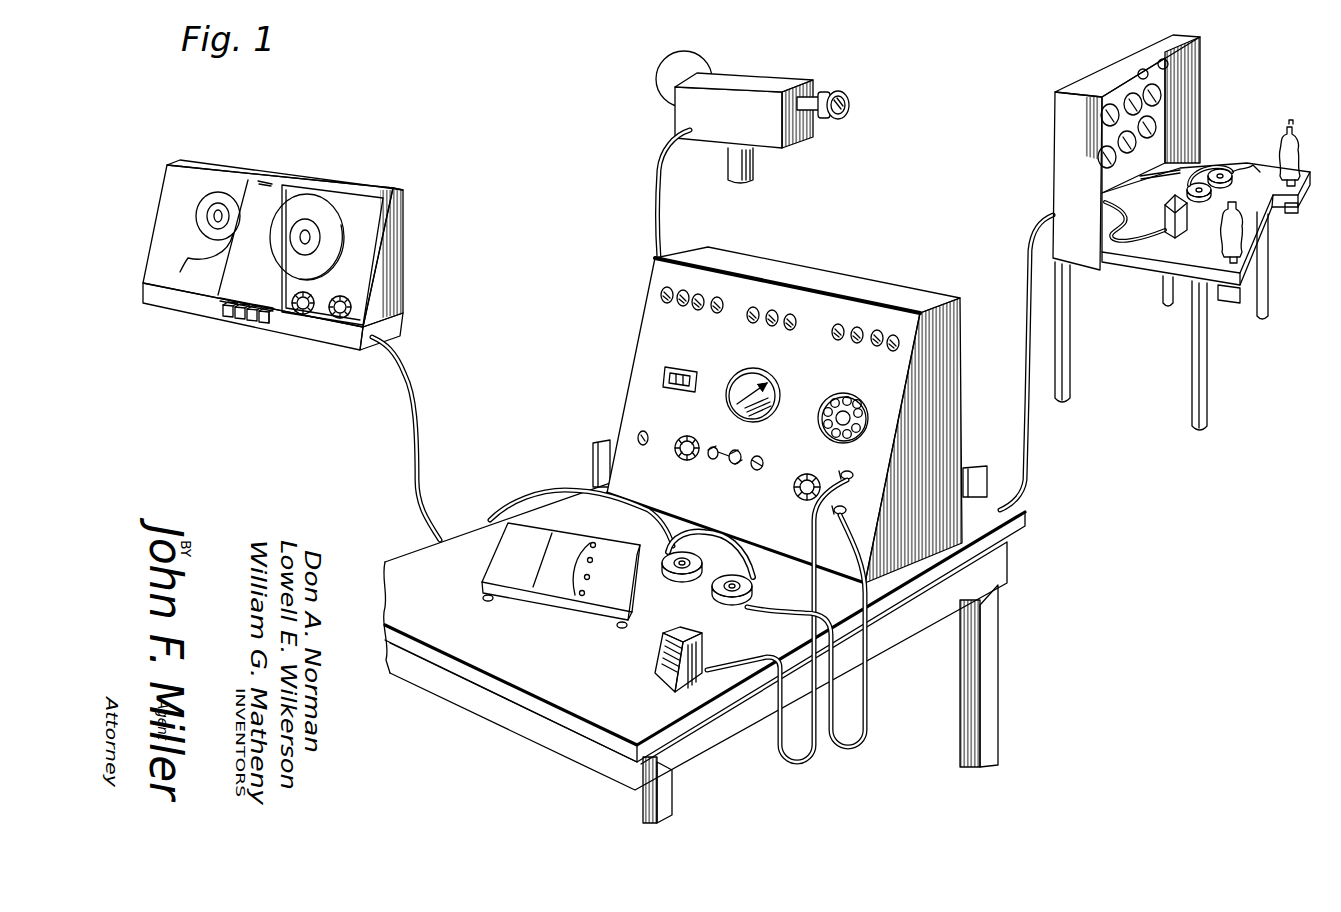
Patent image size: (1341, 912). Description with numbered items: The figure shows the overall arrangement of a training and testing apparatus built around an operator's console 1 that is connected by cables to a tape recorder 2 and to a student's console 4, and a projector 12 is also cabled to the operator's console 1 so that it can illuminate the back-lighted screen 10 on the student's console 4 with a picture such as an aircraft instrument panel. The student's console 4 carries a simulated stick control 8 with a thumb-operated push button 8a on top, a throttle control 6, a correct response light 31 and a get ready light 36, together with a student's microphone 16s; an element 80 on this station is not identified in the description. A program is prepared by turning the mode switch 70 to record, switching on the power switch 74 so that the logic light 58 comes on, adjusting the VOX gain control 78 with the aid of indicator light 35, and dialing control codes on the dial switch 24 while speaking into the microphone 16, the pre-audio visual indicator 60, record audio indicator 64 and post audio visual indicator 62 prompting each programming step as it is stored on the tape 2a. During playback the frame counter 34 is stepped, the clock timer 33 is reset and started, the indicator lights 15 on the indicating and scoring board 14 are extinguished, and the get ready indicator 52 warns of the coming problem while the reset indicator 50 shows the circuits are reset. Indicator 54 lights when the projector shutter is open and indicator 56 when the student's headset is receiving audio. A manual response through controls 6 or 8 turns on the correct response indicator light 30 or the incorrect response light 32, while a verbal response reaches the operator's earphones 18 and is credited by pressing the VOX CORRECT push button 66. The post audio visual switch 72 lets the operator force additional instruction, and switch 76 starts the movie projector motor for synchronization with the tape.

The operator's console 1 is at (937, 399).
The tape recorder 2 is at (403, 252).
The tape 2a is at (197, 250).
The student's console 4 is at (1175, 247).
The throttle control 6 is at (1245, 240).
The simulated stick control 8 is at (1303, 160).
The push button 8a is at (1284, 130).
The back-lighted screen 10 is at (1158, 115).
The projector 12 is at (780, 80).
The indicating and scoring board 14 is at (567, 608).
The indicator lights 15 is at (587, 541).
The microphone 16 is at (660, 651).
The microphone 16s is at (1185, 225).
The earphones 18 is at (690, 596).
The dial switch 24 is at (826, 403).
The correct response indicator light 30 is at (796, 325).
The correct response light 31 is at (1143, 69).
The incorrect response light 32 is at (755, 308).
The clock timer 33 is at (774, 379).
The frame counter 34 is at (701, 358).
The indicator light 35 is at (774, 311).
The get ready light 36 is at (1168, 62).
The reset indicator 50 is at (661, 293).
The get ready indicator 52 is at (684, 291).
The indicator 54 is at (700, 295).
The indicator 56 is at (719, 298).
The logic light 58 is at (840, 325).
The pre-audio visual indicator 60 is at (859, 328).
The post audio visual indicator 62 is at (877, 346).
The record audio indicator 64 is at (894, 351).
The VOX CORRECT push button 66 is at (647, 432).
The mode switch 70 is at (701, 425).
The post audio visual switch 72 is at (728, 443).
The power switch 74 is at (736, 462).
The switch 76 is at (776, 455).
The VOX gain control 78 is at (801, 497).
The handset holder 80 is at (1298, 212).